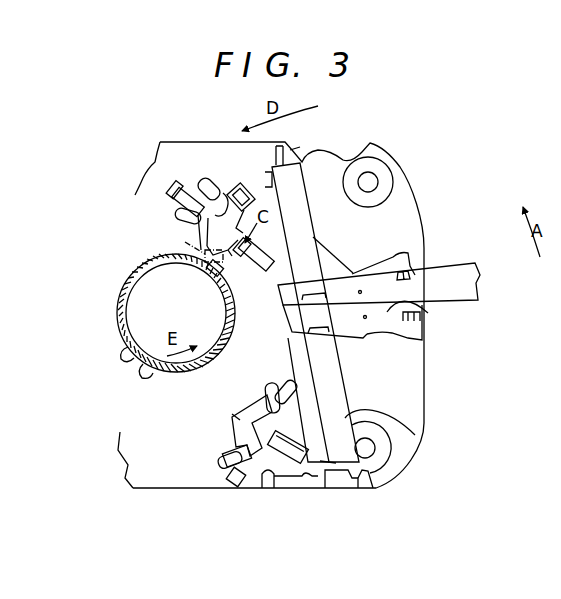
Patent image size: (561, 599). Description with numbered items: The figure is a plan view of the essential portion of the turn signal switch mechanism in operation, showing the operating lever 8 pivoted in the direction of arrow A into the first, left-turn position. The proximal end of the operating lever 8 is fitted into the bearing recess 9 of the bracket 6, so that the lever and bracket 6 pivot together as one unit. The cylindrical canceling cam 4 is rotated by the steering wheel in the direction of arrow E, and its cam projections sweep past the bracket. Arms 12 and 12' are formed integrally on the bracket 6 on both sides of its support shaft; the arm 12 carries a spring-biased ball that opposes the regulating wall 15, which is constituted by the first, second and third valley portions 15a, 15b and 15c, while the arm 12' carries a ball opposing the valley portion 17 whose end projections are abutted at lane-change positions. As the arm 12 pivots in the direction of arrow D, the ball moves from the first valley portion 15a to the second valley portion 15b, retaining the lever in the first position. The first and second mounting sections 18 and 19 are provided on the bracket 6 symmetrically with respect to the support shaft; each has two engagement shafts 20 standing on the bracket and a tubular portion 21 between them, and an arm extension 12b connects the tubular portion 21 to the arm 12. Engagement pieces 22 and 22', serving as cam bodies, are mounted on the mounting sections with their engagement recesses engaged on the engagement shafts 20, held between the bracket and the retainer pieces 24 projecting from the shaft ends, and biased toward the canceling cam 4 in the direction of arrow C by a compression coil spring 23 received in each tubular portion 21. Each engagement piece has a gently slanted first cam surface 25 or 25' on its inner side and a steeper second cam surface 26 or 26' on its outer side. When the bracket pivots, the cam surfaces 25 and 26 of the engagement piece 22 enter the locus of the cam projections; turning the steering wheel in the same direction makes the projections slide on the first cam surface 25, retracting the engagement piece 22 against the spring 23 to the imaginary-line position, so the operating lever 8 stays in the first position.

The canceling cam 4 is at (118, 290).
The bracket 6 is at (356, 283).
The operating lever 8 is at (483, 290).
The bearing recess 9 is at (423, 312).
The arm 12 is at (284, 315).
The arm 12' is at (315, 291).
The arm extension 12b is at (322, 462).
The regulating wall 15 is at (338, 483).
The first valley portion 15a is at (303, 478).
The second valley portion 15b is at (367, 478).
The third valley portion 15c is at (264, 489).
The valley portion 17 is at (297, 150).
The first mounting section 18 is at (170, 179).
The second mounting section 19 is at (256, 471).
The engagement shaft 20 is at (175, 215).
The tubular portion 21 is at (203, 180).
The engagement piece 22 is at (211, 190).
The engagement piece 22' is at (221, 450).
The compression coil spring 23 is at (236, 184).
The retainer piece 24 is at (288, 400).
The first cam surface 25 is at (207, 282).
The first cam surface 25' is at (244, 417).
The second cam surface 26 is at (176, 250).
The second cam surface 26' is at (216, 424).